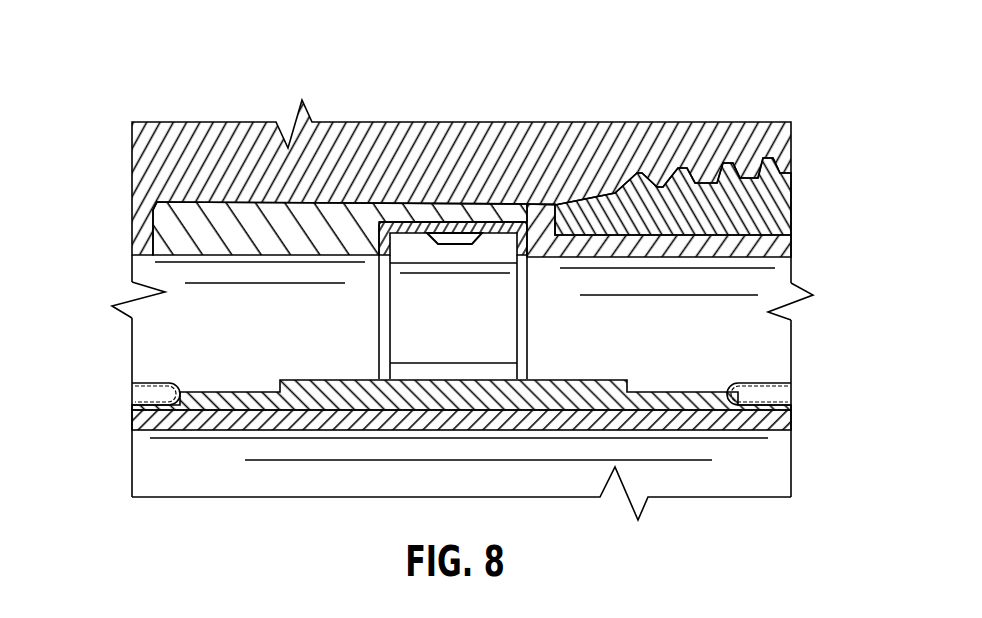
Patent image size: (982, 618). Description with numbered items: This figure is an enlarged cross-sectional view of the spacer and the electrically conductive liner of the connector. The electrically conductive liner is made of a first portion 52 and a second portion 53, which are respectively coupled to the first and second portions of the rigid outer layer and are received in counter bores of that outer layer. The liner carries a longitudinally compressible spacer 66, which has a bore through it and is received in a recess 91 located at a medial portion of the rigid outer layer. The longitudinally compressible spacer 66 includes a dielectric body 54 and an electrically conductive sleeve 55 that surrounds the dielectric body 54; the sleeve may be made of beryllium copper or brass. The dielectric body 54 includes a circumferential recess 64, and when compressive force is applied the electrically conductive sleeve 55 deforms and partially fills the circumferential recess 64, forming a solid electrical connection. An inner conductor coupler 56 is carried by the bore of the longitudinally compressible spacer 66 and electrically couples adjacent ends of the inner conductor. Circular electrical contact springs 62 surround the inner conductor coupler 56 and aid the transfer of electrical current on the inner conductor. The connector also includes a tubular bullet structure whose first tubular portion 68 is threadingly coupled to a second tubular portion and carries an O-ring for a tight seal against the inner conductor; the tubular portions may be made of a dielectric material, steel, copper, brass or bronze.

The first portion of the electrically conductive liner 52 is at (155, 228).
The second portion of the electrically conductive liner 53 is at (770, 222).
The dielectric body 54 is at (520, 206).
The electrically conductive sleeve 55 is at (518, 278).
The inner conductor coupler 56 is at (240, 403).
The circular electrical contact springs 62 is at (148, 393).
The circumferential recess 64 is at (446, 240).
The longitudinally compressible spacer 66 is at (402, 204).
The first tubular portion 68 is at (737, 423).
The recess 91 is at (479, 272).